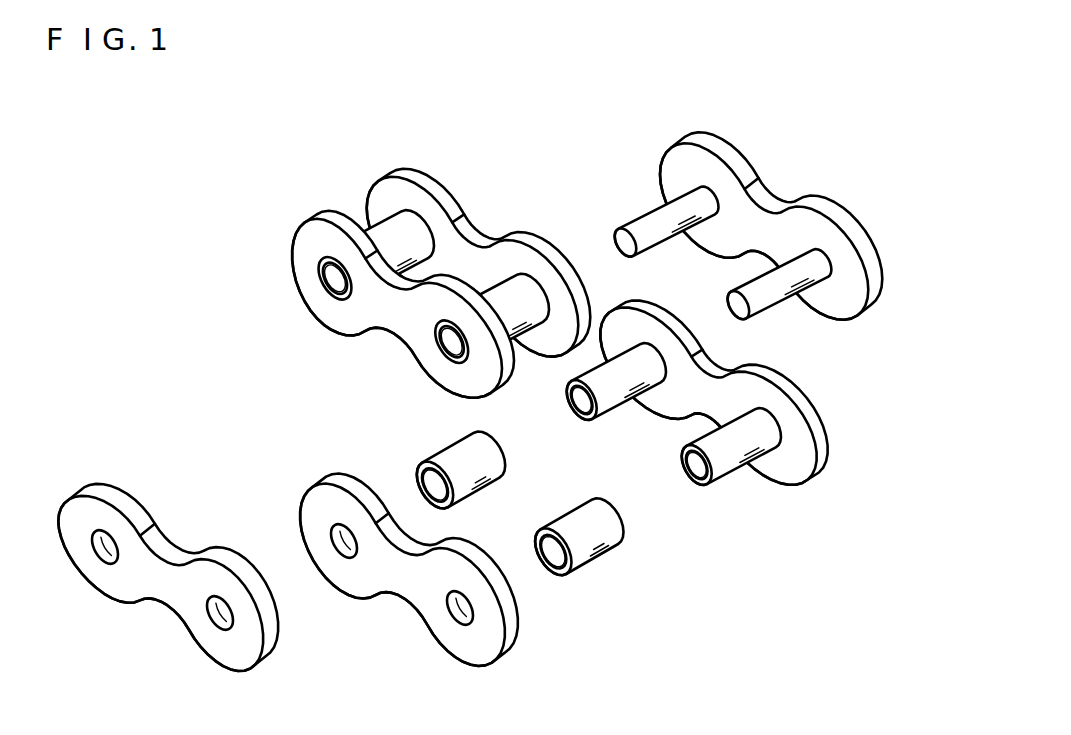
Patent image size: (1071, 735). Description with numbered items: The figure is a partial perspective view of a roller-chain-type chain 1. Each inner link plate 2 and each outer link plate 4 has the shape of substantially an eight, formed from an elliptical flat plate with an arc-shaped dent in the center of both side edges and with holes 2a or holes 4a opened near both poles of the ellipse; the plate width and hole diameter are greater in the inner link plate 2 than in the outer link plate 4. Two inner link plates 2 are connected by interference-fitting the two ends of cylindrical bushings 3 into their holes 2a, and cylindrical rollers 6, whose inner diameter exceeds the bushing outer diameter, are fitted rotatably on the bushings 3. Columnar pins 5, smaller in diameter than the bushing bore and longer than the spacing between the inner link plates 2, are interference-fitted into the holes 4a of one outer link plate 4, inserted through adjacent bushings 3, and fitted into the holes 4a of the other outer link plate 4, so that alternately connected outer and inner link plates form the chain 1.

The chain 1 is at (92, 122).
The inner link plate 2 is at (428, 178).
The hole 2a is at (342, 557).
The bushing 3 is at (611, 416).
The outer link plate 4 is at (727, 148).
The hole 4a is at (107, 560).
The pin 5 is at (647, 210).
The roller 6 is at (390, 223).